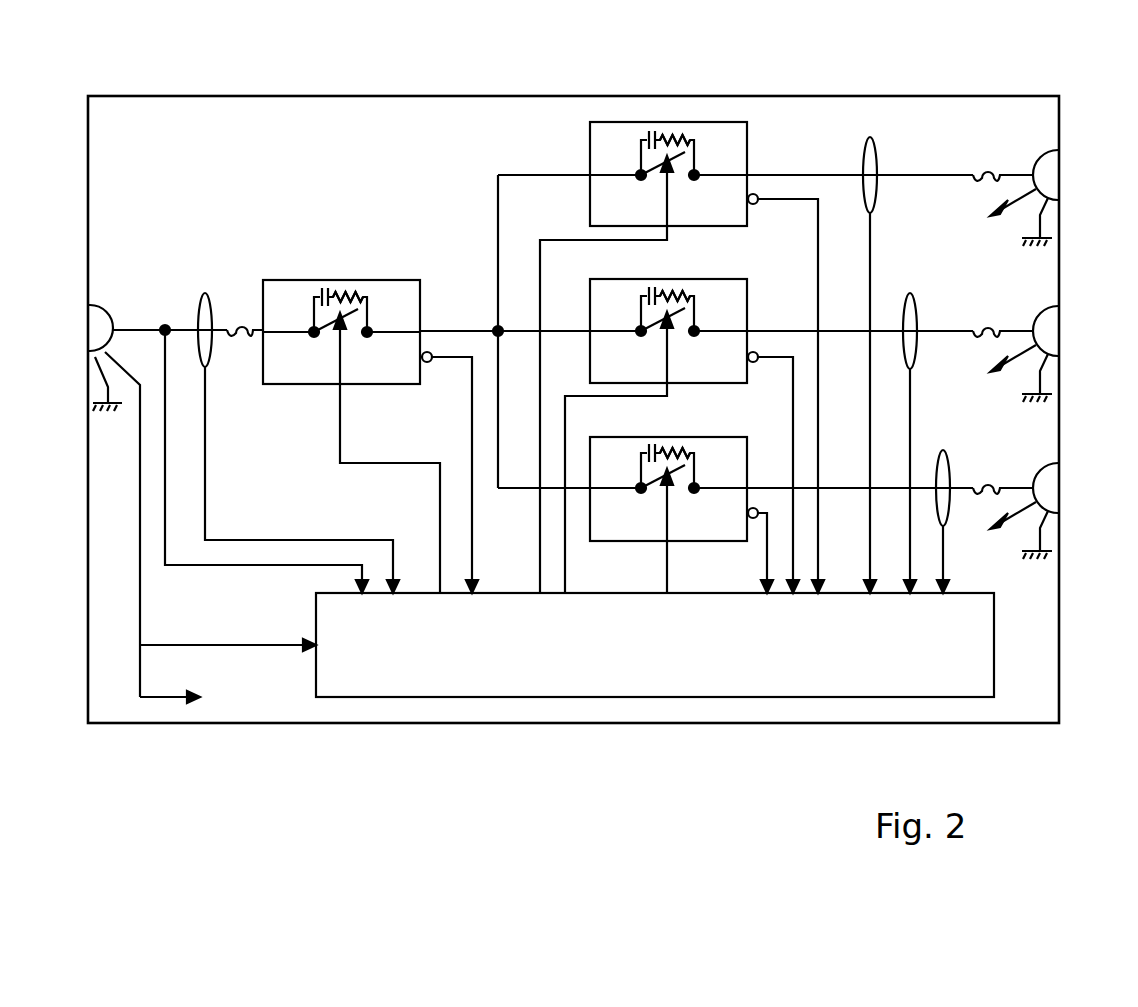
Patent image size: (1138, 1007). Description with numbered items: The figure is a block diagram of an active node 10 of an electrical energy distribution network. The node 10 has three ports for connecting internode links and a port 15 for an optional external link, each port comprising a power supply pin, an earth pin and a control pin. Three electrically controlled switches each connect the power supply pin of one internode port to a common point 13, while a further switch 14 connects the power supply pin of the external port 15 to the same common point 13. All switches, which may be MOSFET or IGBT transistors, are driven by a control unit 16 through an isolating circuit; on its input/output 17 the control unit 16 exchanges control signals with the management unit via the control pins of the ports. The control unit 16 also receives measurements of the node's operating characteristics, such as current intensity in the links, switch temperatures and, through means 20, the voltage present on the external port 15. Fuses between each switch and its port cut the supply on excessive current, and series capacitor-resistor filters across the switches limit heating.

The active node 10 is at (820, 96).
The common point 13 is at (497, 330).
The switch 14 is at (340, 280).
The port 15 is at (98, 330).
The control unit 16 is at (994, 632).
The input/output 17 is at (572, 463).
The voltage measuring means 20 is at (165, 328).